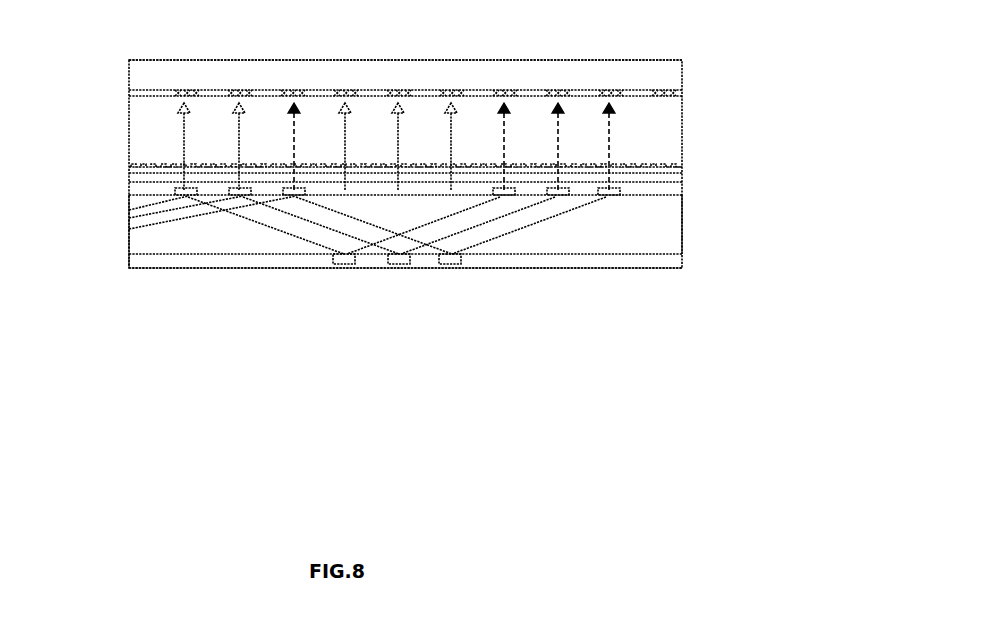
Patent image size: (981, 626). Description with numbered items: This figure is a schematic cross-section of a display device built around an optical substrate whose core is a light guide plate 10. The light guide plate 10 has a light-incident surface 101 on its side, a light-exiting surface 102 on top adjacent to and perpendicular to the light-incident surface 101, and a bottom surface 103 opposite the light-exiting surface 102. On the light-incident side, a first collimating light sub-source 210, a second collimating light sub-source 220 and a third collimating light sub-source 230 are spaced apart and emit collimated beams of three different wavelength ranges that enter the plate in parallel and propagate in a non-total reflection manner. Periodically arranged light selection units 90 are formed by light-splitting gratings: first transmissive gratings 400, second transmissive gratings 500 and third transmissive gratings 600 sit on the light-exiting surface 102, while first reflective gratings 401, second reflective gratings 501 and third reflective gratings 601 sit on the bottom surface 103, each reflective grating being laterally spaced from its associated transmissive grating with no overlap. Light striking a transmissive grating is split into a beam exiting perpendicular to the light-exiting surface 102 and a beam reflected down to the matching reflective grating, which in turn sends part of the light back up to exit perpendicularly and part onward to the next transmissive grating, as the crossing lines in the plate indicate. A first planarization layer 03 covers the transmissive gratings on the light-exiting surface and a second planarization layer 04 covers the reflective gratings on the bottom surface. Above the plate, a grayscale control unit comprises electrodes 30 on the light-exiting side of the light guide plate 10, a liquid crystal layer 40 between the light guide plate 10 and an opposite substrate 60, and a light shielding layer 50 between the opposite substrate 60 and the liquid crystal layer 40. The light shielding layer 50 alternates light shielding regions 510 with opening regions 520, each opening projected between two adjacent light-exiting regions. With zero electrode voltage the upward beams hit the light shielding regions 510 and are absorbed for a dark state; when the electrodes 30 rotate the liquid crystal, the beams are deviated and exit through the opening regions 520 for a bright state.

The light guide plate 10 is at (682, 235).
The light-incident surface 101 is at (129, 245).
The light-exiting surface 102 is at (632, 197).
The bottom surface 103 is at (535, 254).
The first planarization layer 03 is at (682, 183).
The second planarization layer 04 is at (682, 252).
The electrodes 30 is at (682, 162).
The liquid crystal layer 40 is at (682, 125).
The light shielding layer 50 is at (451, 49).
The light shielding regions 510 is at (184, 90).
The opening regions 520 is at (216, 90).
The opposite substrate 60 is at (682, 60).
The first collimating light sub-source 210 is at (129, 208).
The second collimating light sub-source 220 is at (129, 216).
The third collimating light sub-source 230 is at (129, 229).
The light selection units 90 is at (388, 309).
The first transmissive gratings 400 is at (186, 197).
The second transmissive gratings 500 is at (240, 197).
The third transmissive gratings 600 is at (293, 197).
The first reflective gratings 401 is at (344, 264).
The second reflective gratings 501 is at (399, 264).
The third reflective gratings 601 is at (524, 272).